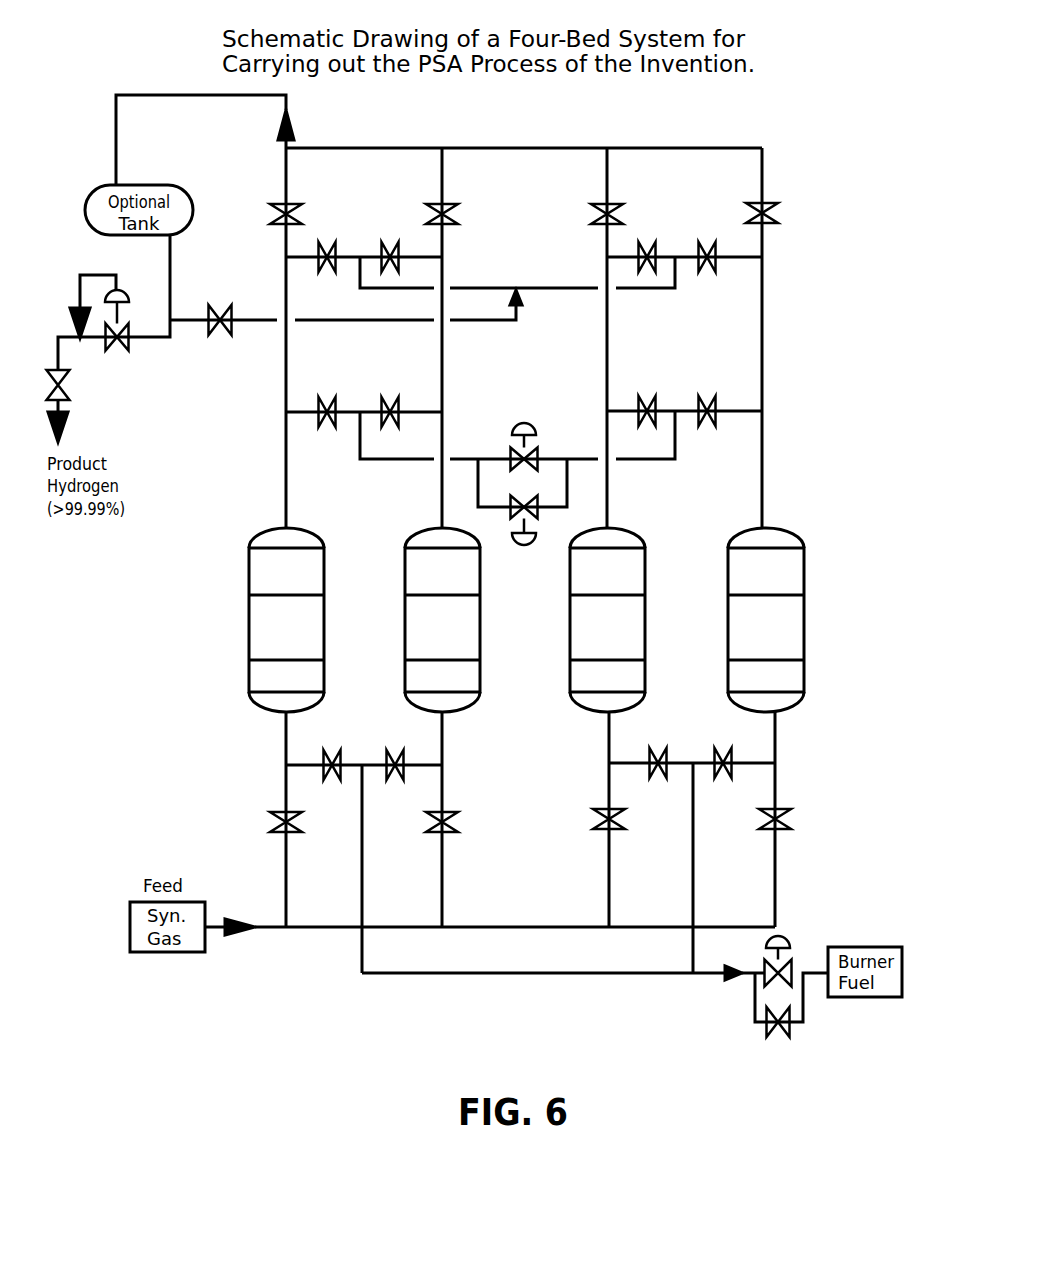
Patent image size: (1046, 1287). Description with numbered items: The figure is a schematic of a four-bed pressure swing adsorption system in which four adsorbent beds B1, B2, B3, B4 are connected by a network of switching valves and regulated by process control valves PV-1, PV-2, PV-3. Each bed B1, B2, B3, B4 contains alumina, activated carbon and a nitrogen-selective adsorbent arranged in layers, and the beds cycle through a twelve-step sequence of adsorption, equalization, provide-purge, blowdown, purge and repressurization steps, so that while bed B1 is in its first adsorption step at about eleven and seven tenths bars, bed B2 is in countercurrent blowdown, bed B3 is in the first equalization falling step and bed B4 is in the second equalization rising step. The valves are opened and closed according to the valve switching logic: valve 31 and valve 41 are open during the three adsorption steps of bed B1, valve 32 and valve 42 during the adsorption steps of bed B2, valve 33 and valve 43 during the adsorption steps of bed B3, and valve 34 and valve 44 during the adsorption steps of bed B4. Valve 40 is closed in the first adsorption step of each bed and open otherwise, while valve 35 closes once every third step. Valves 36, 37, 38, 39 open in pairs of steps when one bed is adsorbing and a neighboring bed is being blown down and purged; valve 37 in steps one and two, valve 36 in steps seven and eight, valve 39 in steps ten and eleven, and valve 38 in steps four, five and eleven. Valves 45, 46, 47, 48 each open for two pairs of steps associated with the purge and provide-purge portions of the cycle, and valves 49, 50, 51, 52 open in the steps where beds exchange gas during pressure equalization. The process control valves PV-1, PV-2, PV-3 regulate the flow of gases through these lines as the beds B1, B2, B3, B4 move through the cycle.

The valve 31 is at (275, 822).
The valve 32 is at (431, 822).
The valve 33 is at (598, 819).
The valve 34 is at (764, 819).
The valve 35 is at (782, 1038).
The valve 36 is at (338, 751).
The valve 37 is at (400, 751).
The valve 38 is at (662, 749).
The valve 39 is at (727, 749).
The valve 40 is at (220, 337).
The valve 41 is at (272, 215).
The valve 42 is at (430, 215).
The valve 43 is at (592, 214).
The valve 44 is at (750, 213).
The valve 45 is at (327, 397).
The valve 46 is at (390, 397).
The valve 47 is at (647, 396).
The valve 48 is at (707, 396).
The valve 49 is at (327, 243).
The valve 50 is at (390, 243).
The valve 51 is at (647, 242).
The valve 52 is at (707, 242).
The bed 1 B1 is at (274, 620).
The bed 2 B2 is at (430, 620).
The bed 3 B3 is at (599, 620).
The bed 4 B4 is at (753, 620).
The process control valve PV-1 is at (756, 961).
The process control valve PV-2 is at (523, 532).
The process control valve PV-3 is at (523, 434).